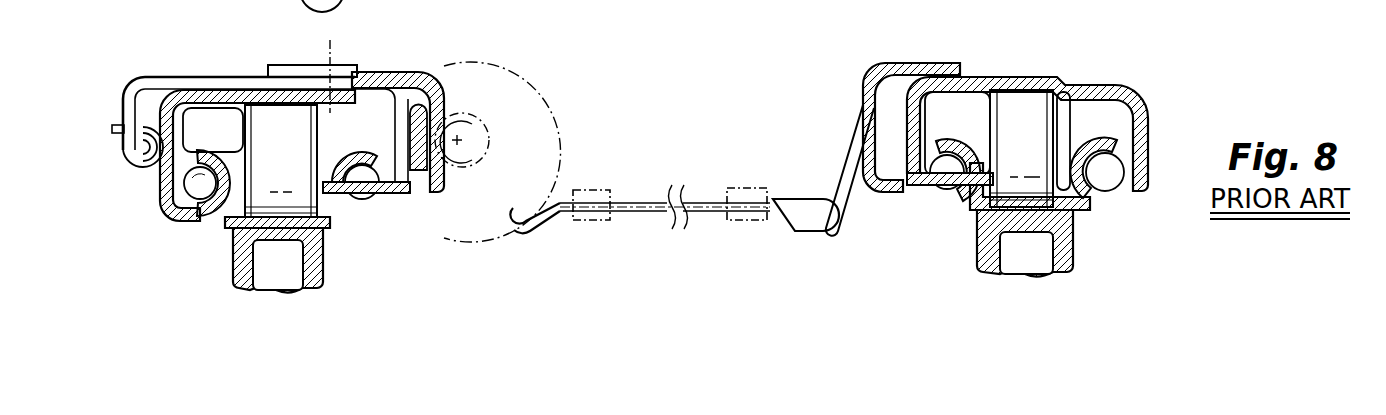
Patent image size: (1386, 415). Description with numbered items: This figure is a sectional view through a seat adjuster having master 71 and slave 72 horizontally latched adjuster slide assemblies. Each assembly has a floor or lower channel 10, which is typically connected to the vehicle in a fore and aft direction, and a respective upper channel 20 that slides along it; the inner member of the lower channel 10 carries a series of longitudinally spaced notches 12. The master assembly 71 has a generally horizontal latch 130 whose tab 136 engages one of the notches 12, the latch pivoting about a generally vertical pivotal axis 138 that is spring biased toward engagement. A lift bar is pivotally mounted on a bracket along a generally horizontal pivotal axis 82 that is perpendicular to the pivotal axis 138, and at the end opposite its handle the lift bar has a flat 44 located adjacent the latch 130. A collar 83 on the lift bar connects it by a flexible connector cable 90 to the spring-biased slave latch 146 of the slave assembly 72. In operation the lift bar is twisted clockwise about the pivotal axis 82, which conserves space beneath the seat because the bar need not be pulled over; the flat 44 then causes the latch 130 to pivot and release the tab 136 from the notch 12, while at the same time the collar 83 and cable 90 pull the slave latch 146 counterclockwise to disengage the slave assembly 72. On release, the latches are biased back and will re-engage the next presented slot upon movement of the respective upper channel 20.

The lower channel 10 is at (228, 220).
The notches 12 is at (337, 196).
The upper channel 20 is at (165, 205).
The flat 44 is at (414, 195).
The master adjuster slide assembly 71 is at (178, 74).
The slave adjuster slide assembly 72 is at (905, 53).
The pivotal axis 82 is at (462, 138).
The collar 83 is at (541, 138).
The flexible connector cable 90 is at (640, 205).
The latch 130 is at (437, 76).
The latch tab 136 is at (350, 137).
The pivotal axis 138 is at (338, 47).
The slave latch 146 is at (865, 92).